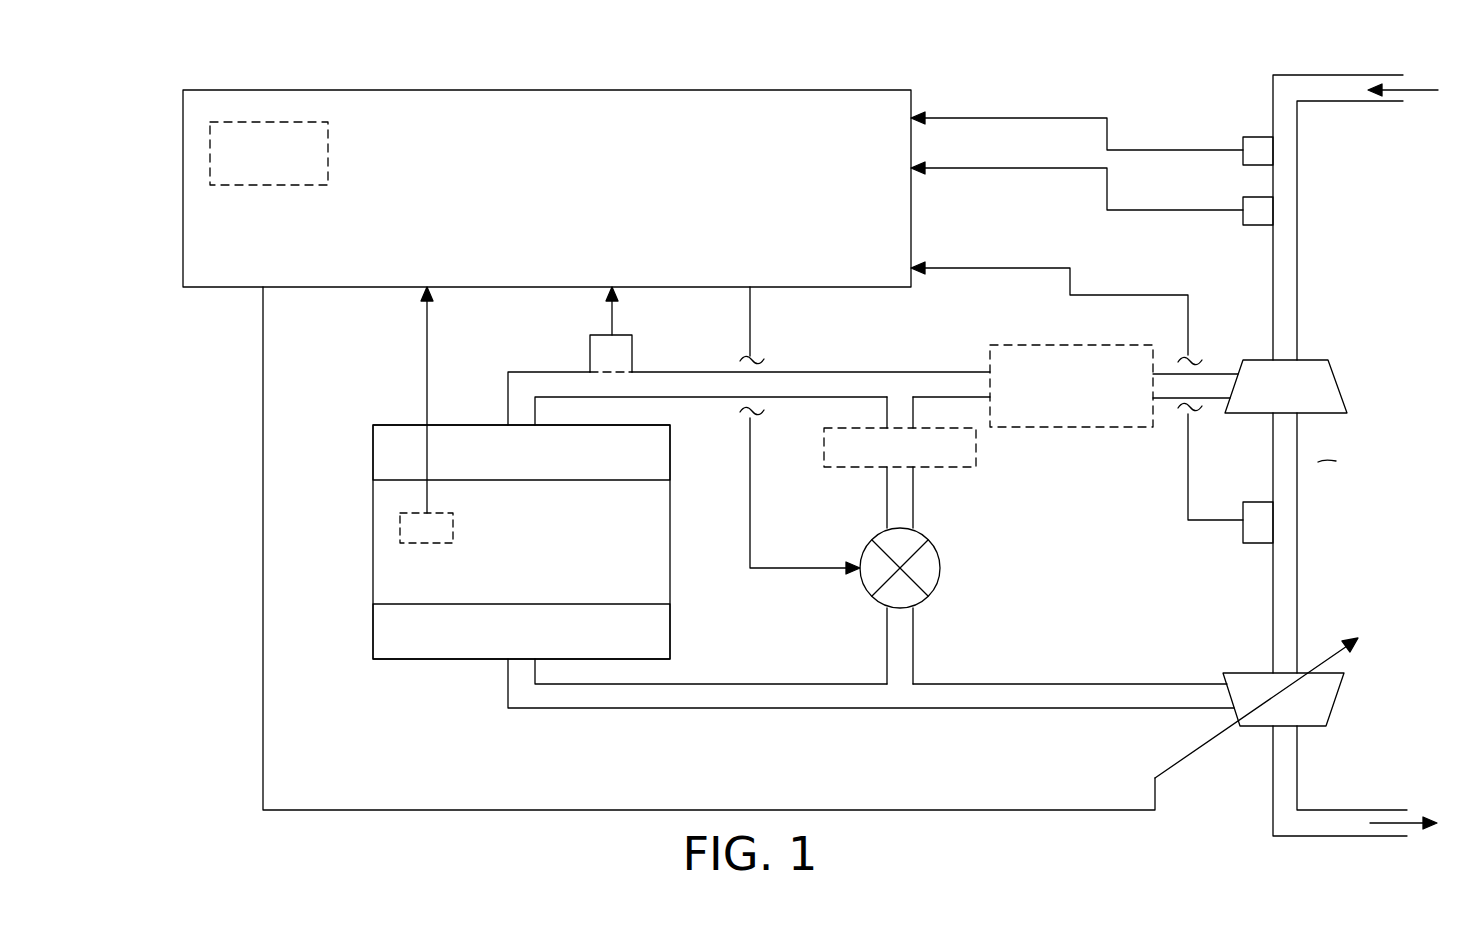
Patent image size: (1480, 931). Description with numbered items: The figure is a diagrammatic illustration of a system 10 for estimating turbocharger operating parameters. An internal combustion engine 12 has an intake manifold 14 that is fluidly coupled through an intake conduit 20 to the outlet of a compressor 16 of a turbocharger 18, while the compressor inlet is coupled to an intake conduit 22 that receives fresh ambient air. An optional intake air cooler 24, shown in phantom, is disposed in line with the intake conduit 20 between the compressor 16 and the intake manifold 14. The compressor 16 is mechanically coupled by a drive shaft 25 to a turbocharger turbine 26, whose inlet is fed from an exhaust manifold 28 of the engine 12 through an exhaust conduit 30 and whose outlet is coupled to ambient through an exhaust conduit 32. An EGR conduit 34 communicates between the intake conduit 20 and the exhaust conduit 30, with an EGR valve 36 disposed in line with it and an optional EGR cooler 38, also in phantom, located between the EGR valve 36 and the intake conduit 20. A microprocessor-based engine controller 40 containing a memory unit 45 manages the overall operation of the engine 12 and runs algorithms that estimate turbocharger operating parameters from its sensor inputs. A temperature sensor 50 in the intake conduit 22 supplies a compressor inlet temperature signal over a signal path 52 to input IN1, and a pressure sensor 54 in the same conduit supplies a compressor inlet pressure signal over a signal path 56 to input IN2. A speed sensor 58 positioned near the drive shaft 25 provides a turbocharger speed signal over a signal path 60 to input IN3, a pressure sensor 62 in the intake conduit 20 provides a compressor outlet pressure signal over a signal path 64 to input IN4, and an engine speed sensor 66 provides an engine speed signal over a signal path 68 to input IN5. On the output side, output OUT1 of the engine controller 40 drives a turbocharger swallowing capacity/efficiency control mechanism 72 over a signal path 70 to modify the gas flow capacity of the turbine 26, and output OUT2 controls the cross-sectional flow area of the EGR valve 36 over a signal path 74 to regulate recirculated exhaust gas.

The system 10 is at (210, 835).
The internal combustion engine 12 is at (670, 592).
The intake manifold 14 is at (485, 425).
The compressor 16 is at (1340, 372).
The turbocharger 18 is at (1326, 538).
The intake conduit 20 is at (855, 372).
The intake conduit 22 is at (1297, 227).
The intake air cooler 24 is at (1065, 430).
The drive shaft 25 is at (1273, 592).
The turbocharger turbine 26 is at (1338, 695).
The exhaust manifold 28 is at (425, 659).
The exhaust conduit 30 is at (718, 708).
The exhaust conduit 32 is at (1335, 836).
The EGR conduit 34 is at (913, 657).
The EGR valve 36 is at (940, 575).
The EGR cooler 38 is at (975, 462).
The engine controller 40 is at (505, 90).
The memory unit 45 is at (328, 165).
The temperature sensor 50 is at (1243, 137).
The signal path 52 is at (1040, 118).
The pressure sensor 54 is at (1243, 197).
The signal path 56 is at (1050, 168).
The speed sensor 58 is at (1260, 502).
The signal path 60 is at (985, 268).
The pressure sensor 62 is at (590, 360).
The signal path 64 is at (612, 325).
The engine speed sensor 66 is at (400, 524).
The signal path 68 is at (427, 315).
The signal path 70 is at (263, 772).
The turbocharger swallowing capacity/efficiency control mechanism 72 is at (1336, 649).
The signal path 74 is at (750, 318).